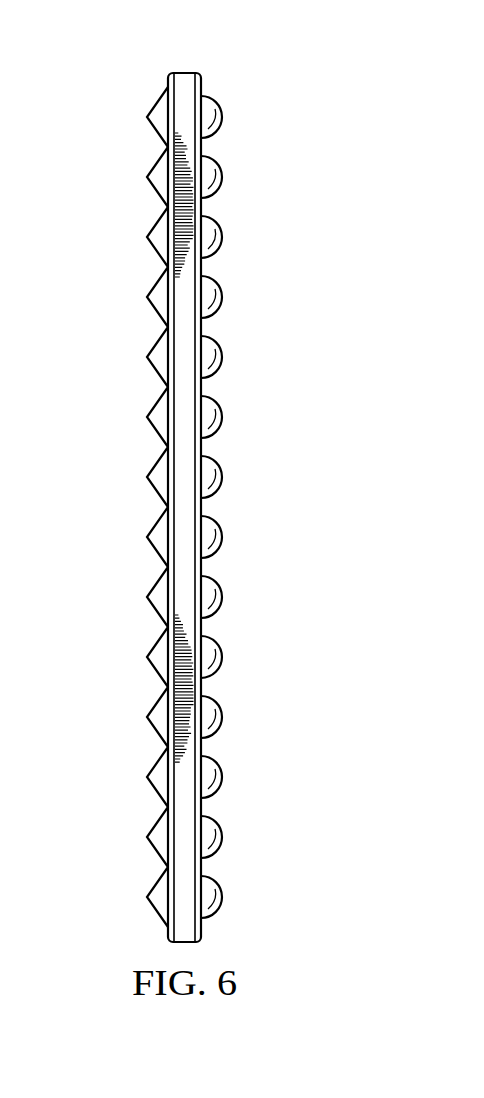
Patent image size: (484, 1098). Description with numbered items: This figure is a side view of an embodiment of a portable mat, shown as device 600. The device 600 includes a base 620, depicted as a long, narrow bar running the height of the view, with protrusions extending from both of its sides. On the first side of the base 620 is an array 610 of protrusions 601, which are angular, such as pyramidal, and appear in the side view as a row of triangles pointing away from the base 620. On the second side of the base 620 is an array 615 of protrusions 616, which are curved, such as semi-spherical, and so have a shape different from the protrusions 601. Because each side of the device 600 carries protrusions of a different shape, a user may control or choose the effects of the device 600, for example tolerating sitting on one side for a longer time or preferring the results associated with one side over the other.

The device 600 is at (167, 484).
The protrusions 601 is at (157, 192).
The array 610 is at (114, 507).
The array 615 is at (254, 507).
The protrusions 616 is at (222, 237).
The base 620 is at (184, 73).